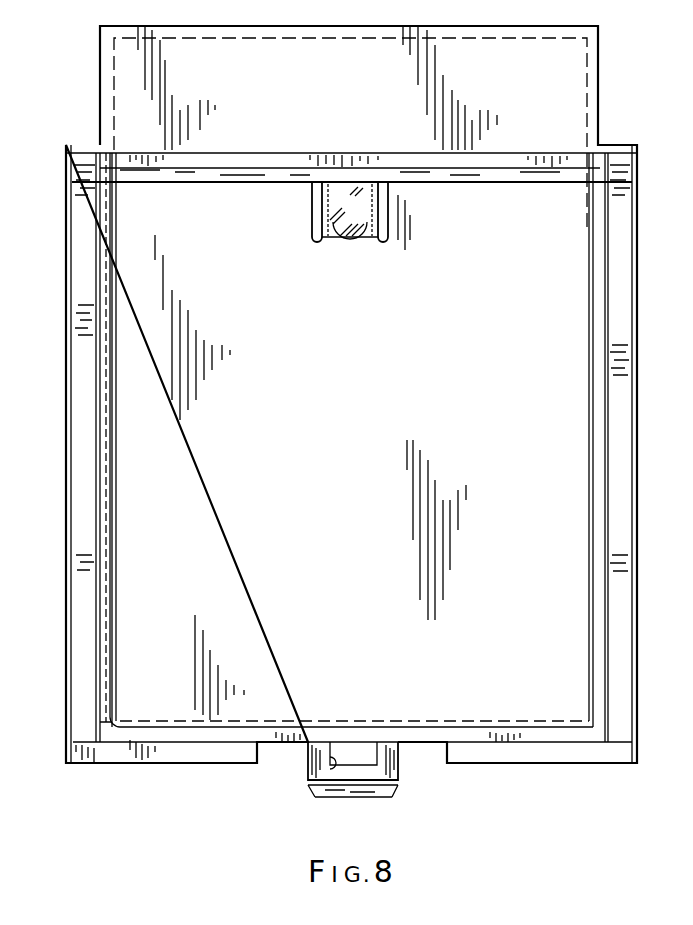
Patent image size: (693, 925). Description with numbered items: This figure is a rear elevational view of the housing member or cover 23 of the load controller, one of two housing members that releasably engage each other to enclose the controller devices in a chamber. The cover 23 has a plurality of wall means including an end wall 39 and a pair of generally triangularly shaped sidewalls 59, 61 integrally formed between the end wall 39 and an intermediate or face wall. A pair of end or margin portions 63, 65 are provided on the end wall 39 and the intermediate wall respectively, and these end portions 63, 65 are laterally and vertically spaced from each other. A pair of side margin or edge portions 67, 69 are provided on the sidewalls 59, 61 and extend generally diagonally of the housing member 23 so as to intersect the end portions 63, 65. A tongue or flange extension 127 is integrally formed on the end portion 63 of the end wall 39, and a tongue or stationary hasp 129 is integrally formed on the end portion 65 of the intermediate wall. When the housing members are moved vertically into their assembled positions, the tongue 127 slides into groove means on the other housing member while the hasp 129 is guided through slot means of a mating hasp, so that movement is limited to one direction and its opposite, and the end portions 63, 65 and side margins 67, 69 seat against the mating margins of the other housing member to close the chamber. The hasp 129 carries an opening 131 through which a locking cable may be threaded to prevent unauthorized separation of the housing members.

The housing member or cover 23 is at (613, 101).
The end wall 39 is at (352, 88).
The end portion 63 is at (242, 160).
The tongue or flange extension 127 is at (470, 177).
The side margin or edge portion 67 is at (100, 351).
The sidewall 59 is at (97, 402).
The side margin or edge portion 69 is at (600, 315).
The sidewall 61 is at (605, 411).
The end portion 65 is at (195, 747).
The tongue or stationary hasp 129 is at (385, 778).
The opening 131 is at (330, 770).